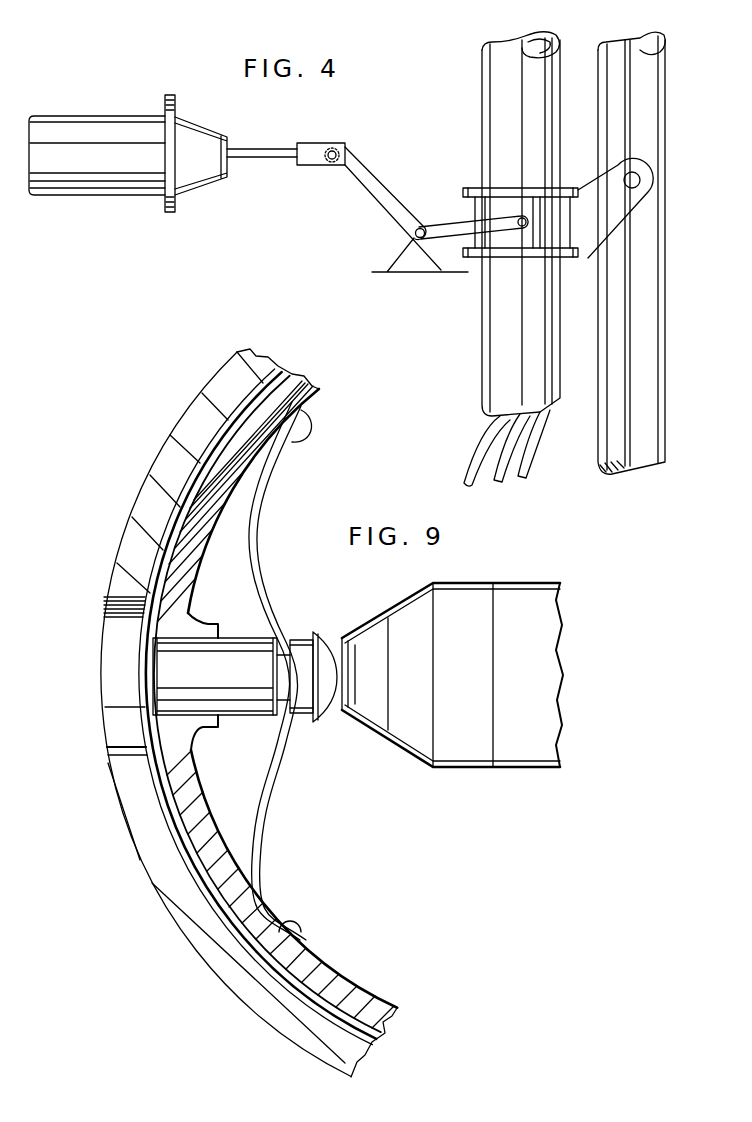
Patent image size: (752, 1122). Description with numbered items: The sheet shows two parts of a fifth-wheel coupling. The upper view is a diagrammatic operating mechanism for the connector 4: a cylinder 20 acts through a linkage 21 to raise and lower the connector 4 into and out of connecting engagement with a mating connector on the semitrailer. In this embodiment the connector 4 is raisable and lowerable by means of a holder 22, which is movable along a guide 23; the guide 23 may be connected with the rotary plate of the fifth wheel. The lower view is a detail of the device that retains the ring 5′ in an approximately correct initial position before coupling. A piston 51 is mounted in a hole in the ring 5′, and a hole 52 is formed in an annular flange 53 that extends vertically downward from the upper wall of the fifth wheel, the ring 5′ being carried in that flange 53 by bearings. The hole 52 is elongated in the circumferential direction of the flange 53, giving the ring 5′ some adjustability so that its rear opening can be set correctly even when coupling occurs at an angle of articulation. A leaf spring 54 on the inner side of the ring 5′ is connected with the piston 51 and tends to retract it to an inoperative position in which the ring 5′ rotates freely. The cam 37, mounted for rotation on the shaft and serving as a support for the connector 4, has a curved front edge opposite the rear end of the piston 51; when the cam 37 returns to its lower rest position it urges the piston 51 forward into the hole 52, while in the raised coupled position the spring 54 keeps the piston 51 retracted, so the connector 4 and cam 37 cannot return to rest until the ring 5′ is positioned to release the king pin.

In FIG. 4, the cylinder 20 is at (95, 137).
In FIG. 4, the linkage 21 is at (376, 204).
In FIG. 4, the connector 4 is at (503, 96).
In FIG. 4, the holder 22 is at (593, 200).
In FIG. 4, the guide 23 is at (637, 243).
In FIG. 9, the cam 37 is at (465, 608).
In FIG. 9, the piston 51 is at (244, 683).
In FIG. 9, the hole 52 is at (113, 663).
In FIG. 9, the annular flange 53 is at (147, 818).
In FIG. 9, the leaf spring 54 is at (274, 566).
In FIG. 9, the ring 5′ is at (178, 776).